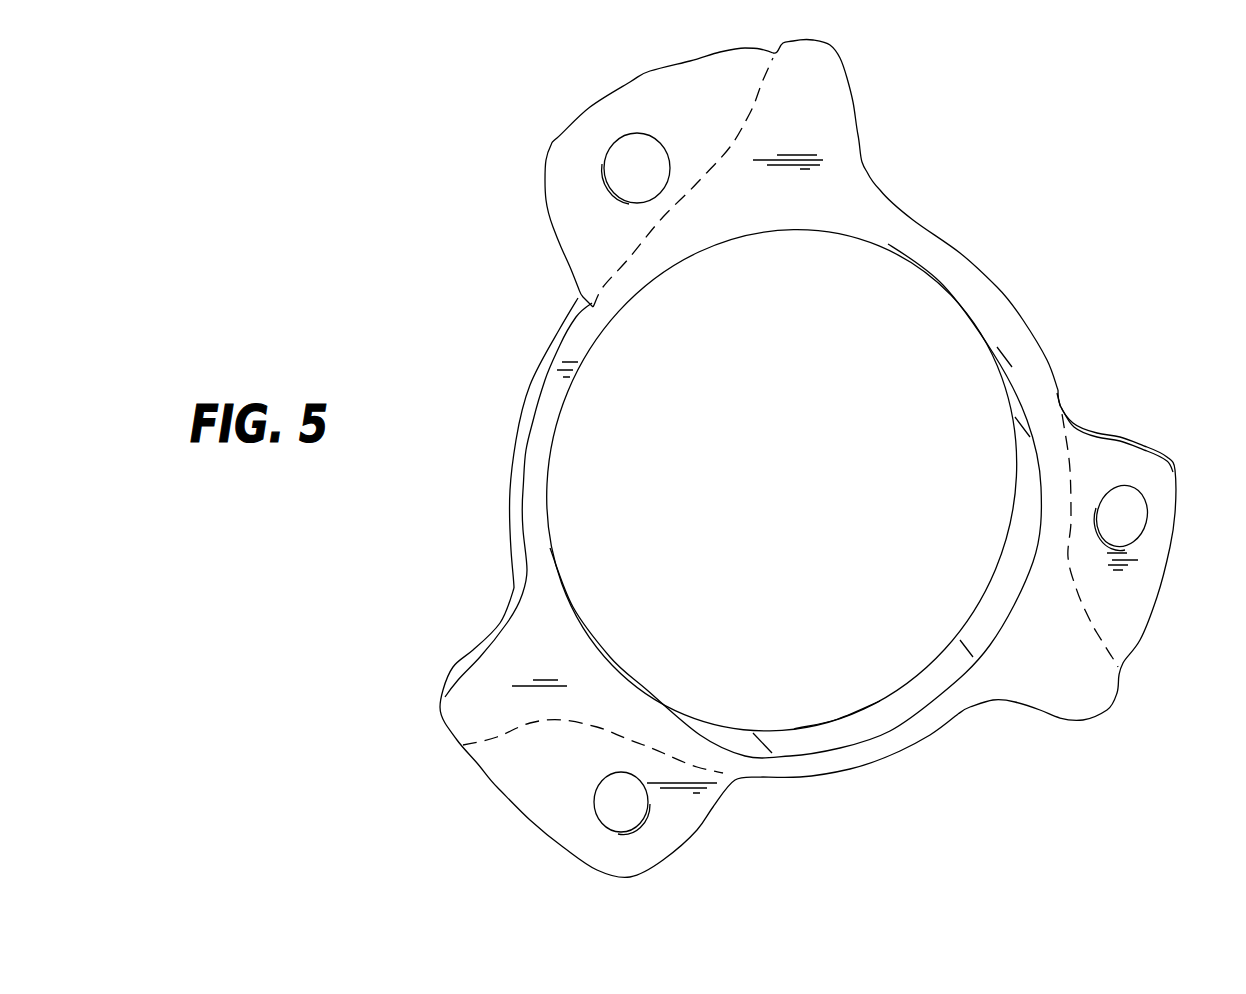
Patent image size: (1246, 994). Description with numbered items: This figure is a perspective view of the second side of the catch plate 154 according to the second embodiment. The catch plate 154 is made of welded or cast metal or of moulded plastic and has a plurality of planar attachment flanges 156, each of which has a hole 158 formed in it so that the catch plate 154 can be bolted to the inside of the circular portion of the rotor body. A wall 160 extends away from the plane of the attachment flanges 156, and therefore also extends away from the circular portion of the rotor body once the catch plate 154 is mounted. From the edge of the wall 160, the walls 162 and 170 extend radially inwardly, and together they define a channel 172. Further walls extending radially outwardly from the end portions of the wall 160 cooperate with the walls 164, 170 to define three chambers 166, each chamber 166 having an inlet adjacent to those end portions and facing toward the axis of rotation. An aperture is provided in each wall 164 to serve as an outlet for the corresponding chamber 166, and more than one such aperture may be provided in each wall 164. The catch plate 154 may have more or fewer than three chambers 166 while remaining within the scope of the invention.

The catch plate 154 is at (1047, 200).
The attachment flange 156 is at (573, 150).
The hole 158 is at (640, 172).
The wall 160 is at (1017, 312).
The wall 162 is at (532, 445).
The wall 164 is at (818, 143).
The chamber 166 is at (987, 613).
The wall 170 is at (793, 738).
The channel 172 is at (840, 723).